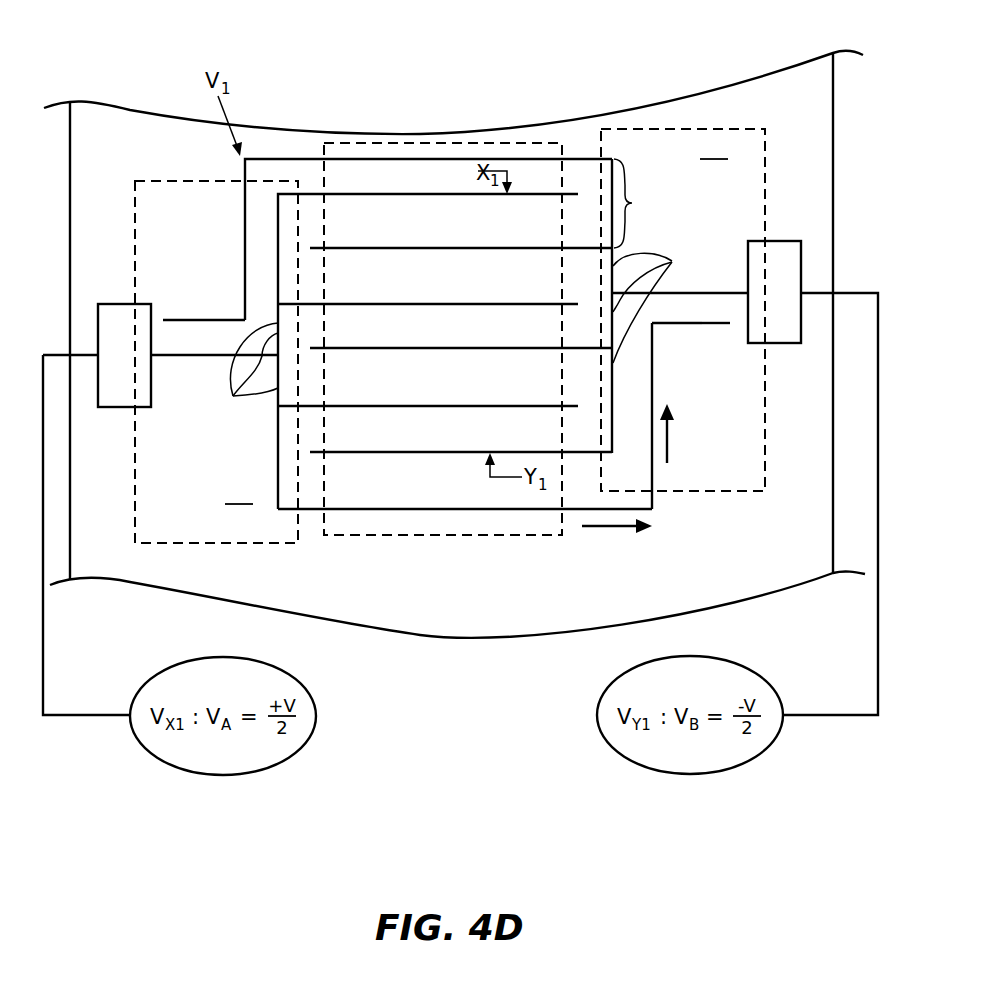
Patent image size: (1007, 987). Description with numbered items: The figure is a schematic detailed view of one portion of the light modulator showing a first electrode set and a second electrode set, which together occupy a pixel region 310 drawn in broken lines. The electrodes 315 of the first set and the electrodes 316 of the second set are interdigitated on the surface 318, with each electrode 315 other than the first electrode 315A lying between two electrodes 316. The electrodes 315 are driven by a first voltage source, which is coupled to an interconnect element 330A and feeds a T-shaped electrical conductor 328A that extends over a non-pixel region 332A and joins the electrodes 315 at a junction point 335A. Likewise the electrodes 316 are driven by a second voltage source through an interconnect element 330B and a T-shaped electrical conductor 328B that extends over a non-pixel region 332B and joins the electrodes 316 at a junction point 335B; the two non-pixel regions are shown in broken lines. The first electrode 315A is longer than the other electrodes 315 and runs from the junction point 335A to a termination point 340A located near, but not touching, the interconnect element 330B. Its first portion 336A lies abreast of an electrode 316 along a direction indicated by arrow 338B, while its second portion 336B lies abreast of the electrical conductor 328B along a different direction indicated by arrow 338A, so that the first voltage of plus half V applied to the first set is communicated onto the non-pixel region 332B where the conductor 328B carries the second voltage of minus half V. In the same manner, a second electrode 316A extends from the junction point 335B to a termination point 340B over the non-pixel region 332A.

The pixel region 310 is at (416, 536).
The electrodes 315 is at (407, 196).
The electrodes 316 is at (407, 250).
The first electrode 315A is at (706, 324).
The second electrode 316A is at (200, 319).
The surface 318 is at (774, 559).
The electrical conductors 328A is at (229, 367).
The electrical conductors 328B is at (670, 306).
The interconnect element 330A is at (112, 304).
The interconnect element 330B is at (790, 241).
The non-pixel region 332A is at (196, 556).
The non-pixel region 332B is at (695, 505).
The junction point 335A is at (278, 405).
The junction point 335B is at (650, 306).
The first portion 336A is at (477, 512).
The second portion 336B is at (670, 324).
The arrow 338A is at (667, 440).
The arrow 338B is at (604, 528).
The termination point 340A is at (730, 322).
The termination point 340B is at (163, 321).